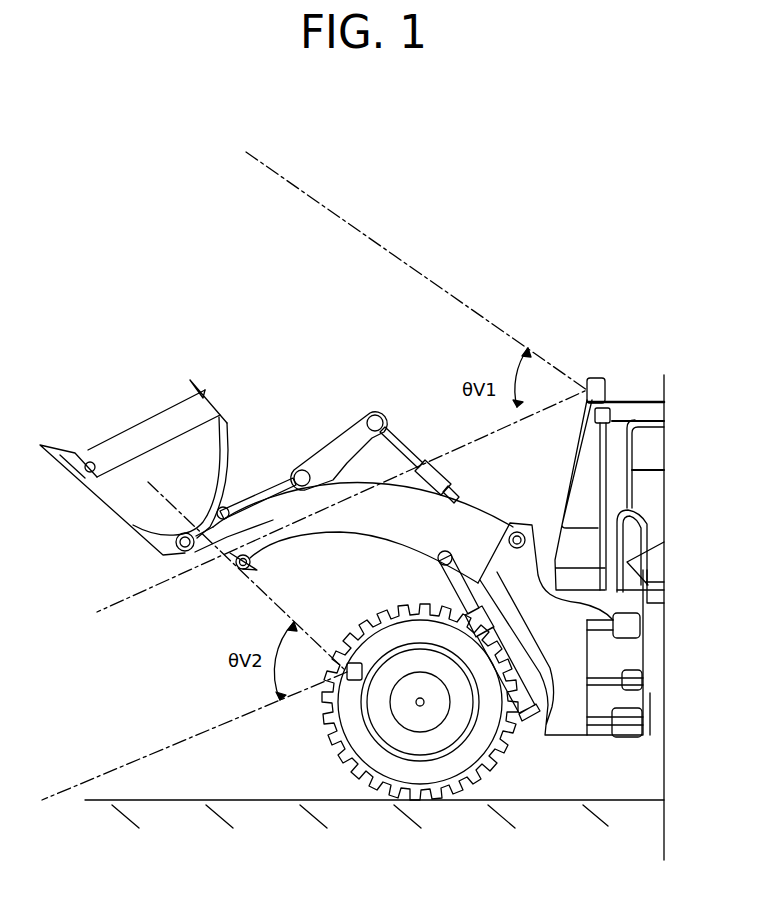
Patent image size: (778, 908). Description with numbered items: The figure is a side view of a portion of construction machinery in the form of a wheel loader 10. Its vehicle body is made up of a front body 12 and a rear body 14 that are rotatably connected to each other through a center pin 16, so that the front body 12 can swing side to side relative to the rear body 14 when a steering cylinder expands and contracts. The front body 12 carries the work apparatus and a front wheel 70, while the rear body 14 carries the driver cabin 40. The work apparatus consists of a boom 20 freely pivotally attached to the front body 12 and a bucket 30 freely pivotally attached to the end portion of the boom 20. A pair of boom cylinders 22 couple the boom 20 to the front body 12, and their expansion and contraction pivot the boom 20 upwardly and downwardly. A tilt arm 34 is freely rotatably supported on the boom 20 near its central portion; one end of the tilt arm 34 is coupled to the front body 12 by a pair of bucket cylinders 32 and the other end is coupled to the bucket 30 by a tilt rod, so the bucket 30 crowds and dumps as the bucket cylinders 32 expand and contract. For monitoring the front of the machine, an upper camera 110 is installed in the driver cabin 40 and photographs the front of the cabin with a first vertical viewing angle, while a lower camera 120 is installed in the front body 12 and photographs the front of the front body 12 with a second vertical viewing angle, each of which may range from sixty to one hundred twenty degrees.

The wheel loader 10 is at (704, 370).
The front body 12 is at (560, 735).
The rear body 14 is at (657, 668).
The center pin 16 is at (617, 737).
The boom 20 is at (208, 565).
The boom cylinders 22 is at (525, 690).
The bucket 30 is at (125, 502).
The bucket cylinders 32 is at (447, 478).
The tilt arm 34 is at (322, 450).
The driver cabin 40 is at (627, 407).
The front wheel 70 is at (418, 778).
The upper camera 110 is at (592, 377).
The lower camera 120 is at (353, 682).